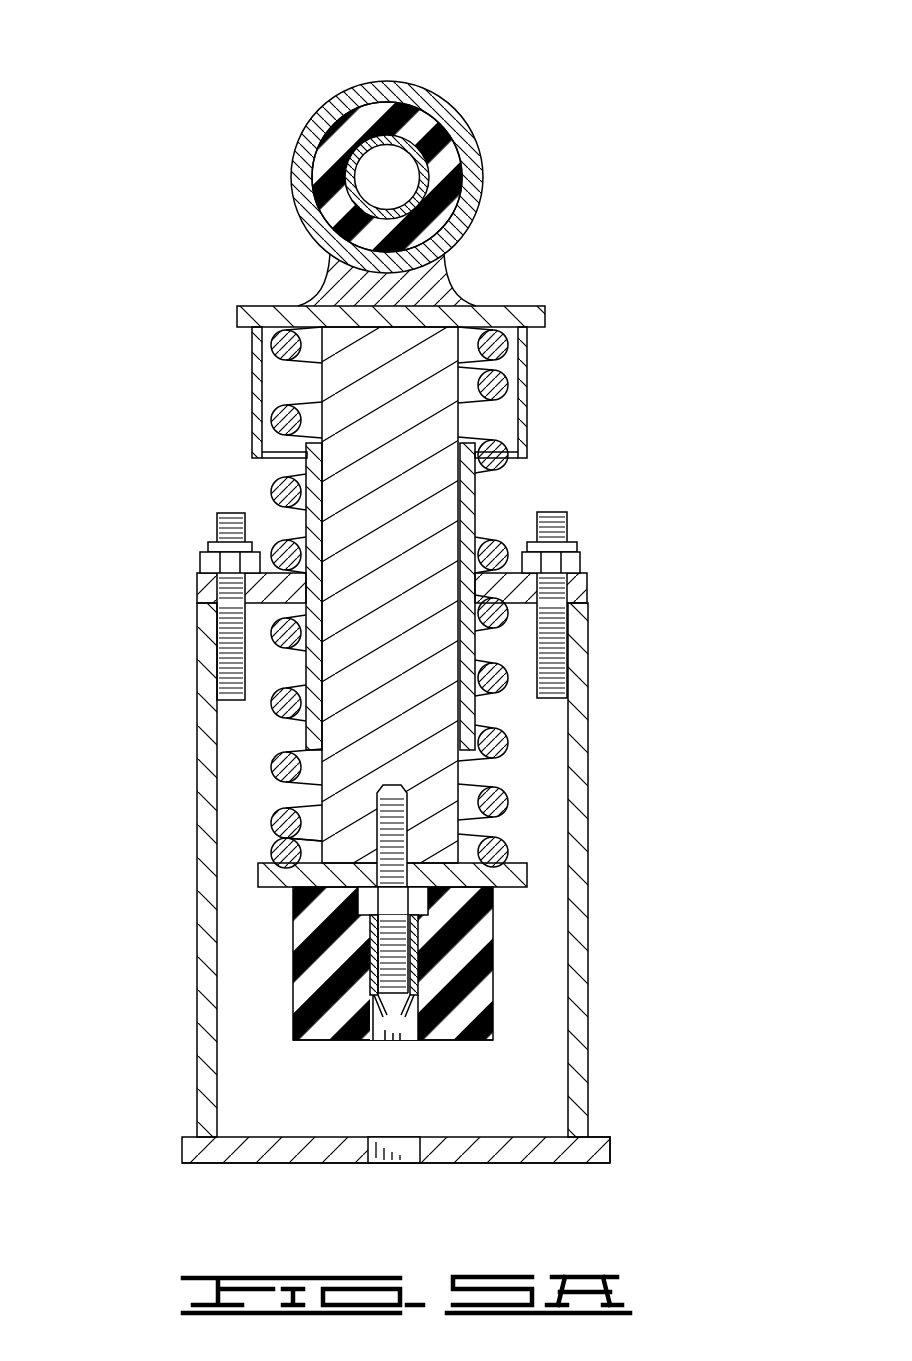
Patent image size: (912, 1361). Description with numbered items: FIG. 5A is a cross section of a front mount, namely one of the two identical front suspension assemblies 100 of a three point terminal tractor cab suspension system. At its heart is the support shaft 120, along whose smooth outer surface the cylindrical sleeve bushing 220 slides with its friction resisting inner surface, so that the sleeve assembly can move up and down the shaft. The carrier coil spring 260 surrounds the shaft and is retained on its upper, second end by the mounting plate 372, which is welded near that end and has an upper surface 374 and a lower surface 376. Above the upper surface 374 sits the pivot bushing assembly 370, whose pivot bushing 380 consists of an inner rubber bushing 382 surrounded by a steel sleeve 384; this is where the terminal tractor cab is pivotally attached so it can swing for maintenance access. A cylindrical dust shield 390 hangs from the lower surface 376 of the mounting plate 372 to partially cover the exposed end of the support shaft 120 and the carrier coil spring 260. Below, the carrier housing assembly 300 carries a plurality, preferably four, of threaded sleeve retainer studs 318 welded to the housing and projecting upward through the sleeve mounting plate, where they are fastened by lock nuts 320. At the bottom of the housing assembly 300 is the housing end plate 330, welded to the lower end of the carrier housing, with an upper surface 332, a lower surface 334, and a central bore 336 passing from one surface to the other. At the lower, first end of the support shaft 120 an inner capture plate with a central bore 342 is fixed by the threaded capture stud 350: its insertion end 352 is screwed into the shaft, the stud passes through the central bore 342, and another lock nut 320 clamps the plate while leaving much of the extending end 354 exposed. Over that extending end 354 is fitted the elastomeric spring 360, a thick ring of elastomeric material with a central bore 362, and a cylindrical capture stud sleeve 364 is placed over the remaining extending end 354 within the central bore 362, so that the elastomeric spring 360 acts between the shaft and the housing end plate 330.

The front suspension assembly 100 is at (597, 72).
The support shaft 120 is at (460, 776).
The cylindrical sleeve bushing 220 is at (340, 490).
The carrier coil spring 260 is at (280, 415).
The carrier housing assembly 300 is at (588, 660).
The threaded sleeve retainer studs 318 is at (553, 510).
The lock nuts 320 is at (578, 558).
The housing end plate 330 is at (188, 1150).
The upper surface 332 is at (598, 1137).
The lower surface 334 is at (548, 1160).
The central bore 336 is at (400, 1165).
The central bore 342 is at (290, 881).
The threaded capture stud 350 is at (493, 925).
The insertion end 352 is at (385, 796).
The extending end 354 is at (358, 955).
The elastomeric spring 360 is at (495, 995).
The central bore 362 is at (405, 1038).
The cylindrical capture stud sleeve 364 is at (325, 1015).
The pivot bushing assembly 370 is at (462, 283).
The mounting plate 372 is at (548, 315).
The upper surface 374 is at (258, 303).
The lower surface 376 is at (243, 331).
The pivot bushing 380 is at (487, 172).
The inner rubber bushing 382 is at (330, 180).
The steel sleeve 384 is at (343, 100).
The cylindrical dust shield 390 is at (528, 372).